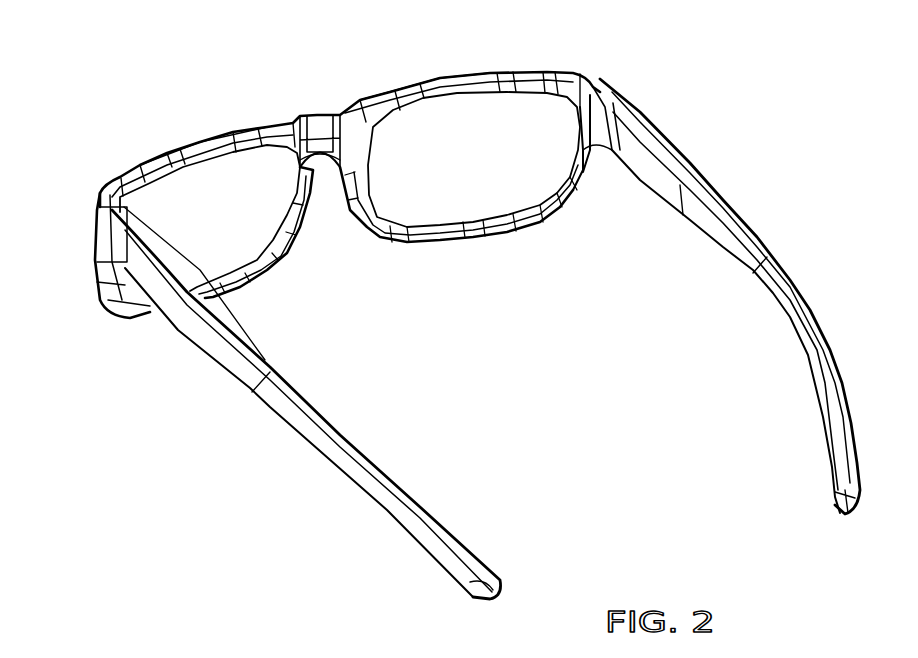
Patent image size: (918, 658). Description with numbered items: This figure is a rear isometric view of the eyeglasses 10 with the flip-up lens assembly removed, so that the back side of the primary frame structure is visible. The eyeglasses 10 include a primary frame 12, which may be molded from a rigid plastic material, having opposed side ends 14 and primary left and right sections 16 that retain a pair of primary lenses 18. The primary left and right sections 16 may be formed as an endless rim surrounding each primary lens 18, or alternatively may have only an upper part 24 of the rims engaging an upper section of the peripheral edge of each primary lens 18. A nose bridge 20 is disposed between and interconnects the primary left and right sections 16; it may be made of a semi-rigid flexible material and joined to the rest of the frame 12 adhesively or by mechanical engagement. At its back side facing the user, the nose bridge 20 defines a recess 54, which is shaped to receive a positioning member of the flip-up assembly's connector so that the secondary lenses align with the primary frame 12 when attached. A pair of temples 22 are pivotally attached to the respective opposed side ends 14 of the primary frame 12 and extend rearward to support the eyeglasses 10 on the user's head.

The eyeglasses 10 is at (454, 305).
The primary frame 12 is at (356, 173).
The opposed side ends 14 is at (95, 232).
The primary left and right sections 16 is at (257, 270).
The primary lenses 18 is at (233, 204).
The nose bridge 20 is at (310, 165).
The temples 22 is at (723, 200).
The upper part 24 is at (258, 120).
The recess 54 is at (322, 112).